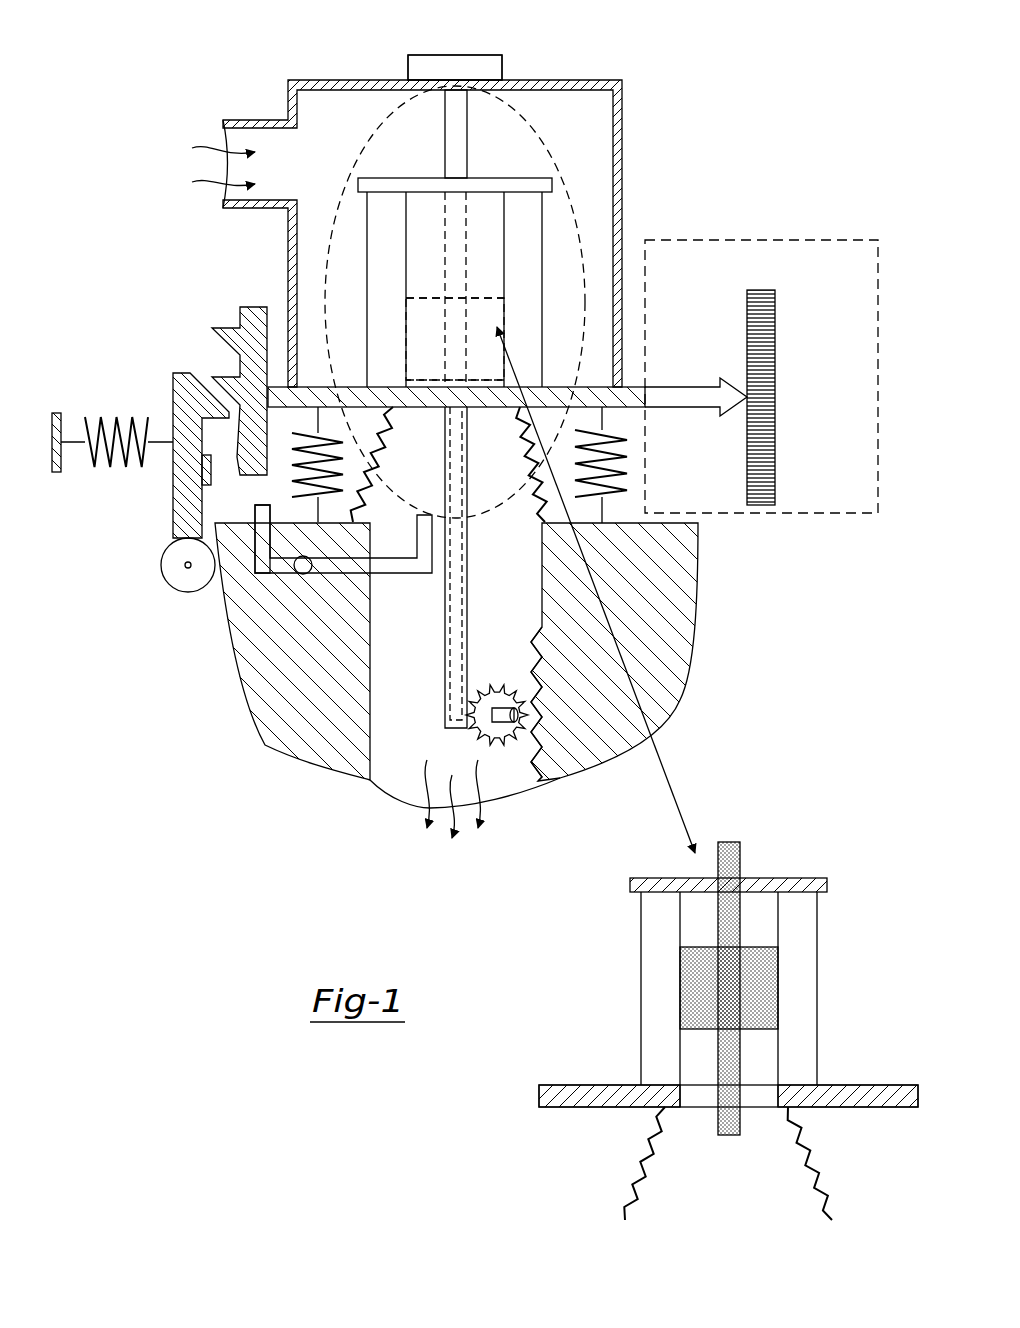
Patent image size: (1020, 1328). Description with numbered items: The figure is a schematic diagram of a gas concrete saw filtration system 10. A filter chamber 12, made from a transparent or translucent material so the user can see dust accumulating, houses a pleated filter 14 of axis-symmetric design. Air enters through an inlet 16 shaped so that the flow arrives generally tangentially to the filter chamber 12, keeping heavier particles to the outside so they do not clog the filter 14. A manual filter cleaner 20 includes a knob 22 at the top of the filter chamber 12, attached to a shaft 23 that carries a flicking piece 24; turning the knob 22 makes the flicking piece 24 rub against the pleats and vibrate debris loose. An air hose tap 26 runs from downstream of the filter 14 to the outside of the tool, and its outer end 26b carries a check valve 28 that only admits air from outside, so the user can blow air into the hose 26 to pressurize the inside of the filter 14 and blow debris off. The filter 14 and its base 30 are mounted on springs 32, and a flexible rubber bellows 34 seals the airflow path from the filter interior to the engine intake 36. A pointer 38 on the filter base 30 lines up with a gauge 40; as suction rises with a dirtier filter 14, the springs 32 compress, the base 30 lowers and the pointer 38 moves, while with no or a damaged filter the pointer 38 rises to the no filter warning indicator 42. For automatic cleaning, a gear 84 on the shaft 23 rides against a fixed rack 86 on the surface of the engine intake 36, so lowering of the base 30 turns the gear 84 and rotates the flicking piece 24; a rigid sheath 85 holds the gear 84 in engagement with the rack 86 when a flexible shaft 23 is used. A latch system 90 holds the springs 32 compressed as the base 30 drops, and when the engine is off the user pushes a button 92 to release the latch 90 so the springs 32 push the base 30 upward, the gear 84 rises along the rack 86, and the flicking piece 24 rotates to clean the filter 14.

The gas concrete saw filtration system 10 is at (725, 119).
The filter chamber 12 is at (623, 113).
The filter 14 is at (532, 214).
The inlet 16 is at (232, 128).
The manual filter cleaner 20 is at (507, 50).
The knob 22 is at (422, 62).
The shaft 23 is at (470, 522).
The flicking piece 24 is at (497, 316).
The air hose tap 26 is at (392, 568).
The outer end 26b is at (258, 516).
The check valve 28 is at (298, 578).
The base 30 is at (313, 385).
The springs 32 is at (622, 434).
The flexible rubber bellows 34 is at (385, 472).
The engine intake 36 is at (380, 770).
The pointer 38 is at (700, 396).
The gauge 40 is at (742, 284).
The no filter warning indicator 42 is at (818, 244).
The gear 84 is at (493, 700).
The rigid sheath 85 is at (445, 662).
The rack 86 is at (535, 638).
The latch system 90 is at (195, 352).
The button 92 is at (205, 492).